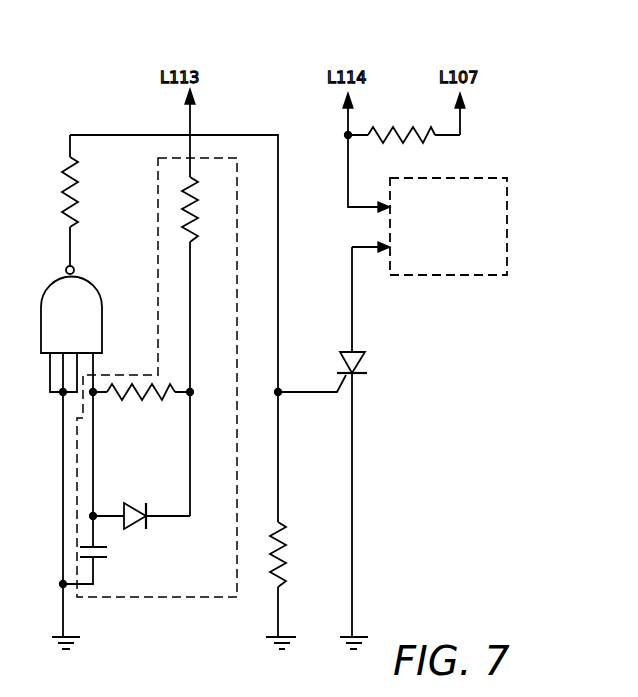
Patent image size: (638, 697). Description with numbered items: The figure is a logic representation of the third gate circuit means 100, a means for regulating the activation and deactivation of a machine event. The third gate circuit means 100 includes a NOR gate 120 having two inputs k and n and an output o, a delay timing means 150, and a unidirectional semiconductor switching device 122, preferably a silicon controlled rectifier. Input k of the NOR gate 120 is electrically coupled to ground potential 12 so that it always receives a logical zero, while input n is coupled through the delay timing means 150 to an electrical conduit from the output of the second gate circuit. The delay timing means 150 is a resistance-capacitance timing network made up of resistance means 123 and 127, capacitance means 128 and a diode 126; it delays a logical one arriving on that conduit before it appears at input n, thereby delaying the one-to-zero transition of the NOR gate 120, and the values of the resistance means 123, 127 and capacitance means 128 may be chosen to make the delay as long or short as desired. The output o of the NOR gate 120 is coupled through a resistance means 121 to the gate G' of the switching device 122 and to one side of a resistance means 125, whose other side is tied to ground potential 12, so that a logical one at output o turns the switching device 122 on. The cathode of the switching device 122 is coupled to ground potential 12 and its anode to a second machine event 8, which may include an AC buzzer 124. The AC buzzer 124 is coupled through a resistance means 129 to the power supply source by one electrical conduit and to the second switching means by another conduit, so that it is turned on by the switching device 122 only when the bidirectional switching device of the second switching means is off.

The third gate circuit means 100 is at (434, 54).
The second machine event 8 is at (465, 178).
The resistance means 129 is at (404, 133).
The AC buzzer 124 is at (466, 268).
The unidirectional semiconductor switching device 122 is at (362, 377).
The resistance means 125 is at (276, 568).
The ground potential 12 is at (70, 637).
The resistance means 121 is at (77, 196).
The NOR gate 120 is at (104, 296).
The resistance means 123 is at (196, 213).
The resistance means 127 is at (145, 397).
The diode 126 is at (147, 526).
The capacitance means 128 is at (100, 560).
The delay timing means 150 is at (177, 600).